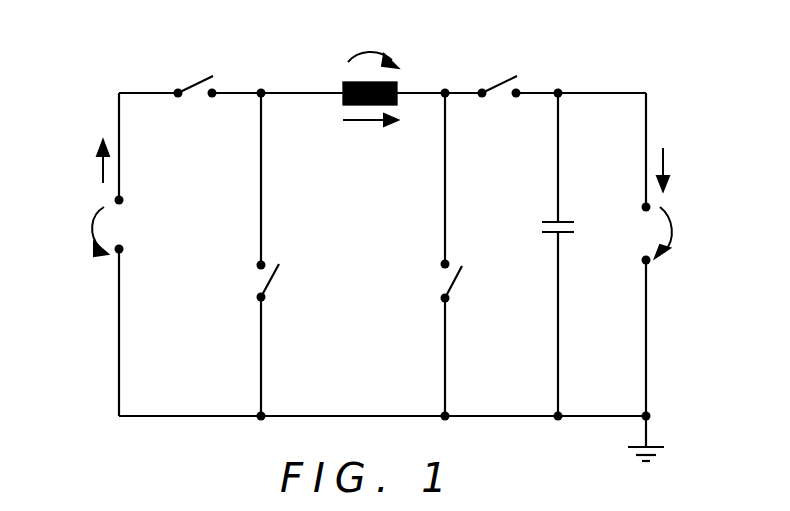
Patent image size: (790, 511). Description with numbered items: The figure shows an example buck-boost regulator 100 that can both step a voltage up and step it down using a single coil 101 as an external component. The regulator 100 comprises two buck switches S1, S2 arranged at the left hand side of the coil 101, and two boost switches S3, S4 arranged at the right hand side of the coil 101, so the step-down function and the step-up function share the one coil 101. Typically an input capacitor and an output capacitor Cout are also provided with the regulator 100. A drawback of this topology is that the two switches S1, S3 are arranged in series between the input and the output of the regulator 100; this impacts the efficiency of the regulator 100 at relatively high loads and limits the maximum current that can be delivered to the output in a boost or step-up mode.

The buck-boost regulator 100 is at (172, 33).
The coil 101 is at (343, 96).
The buck switch S1 is at (195, 99).
The buck switch S2 is at (249, 281).
The boost switch S3 is at (499, 99).
The boost switch S4 is at (433, 281).
The output capacitor Cout is at (541, 215).